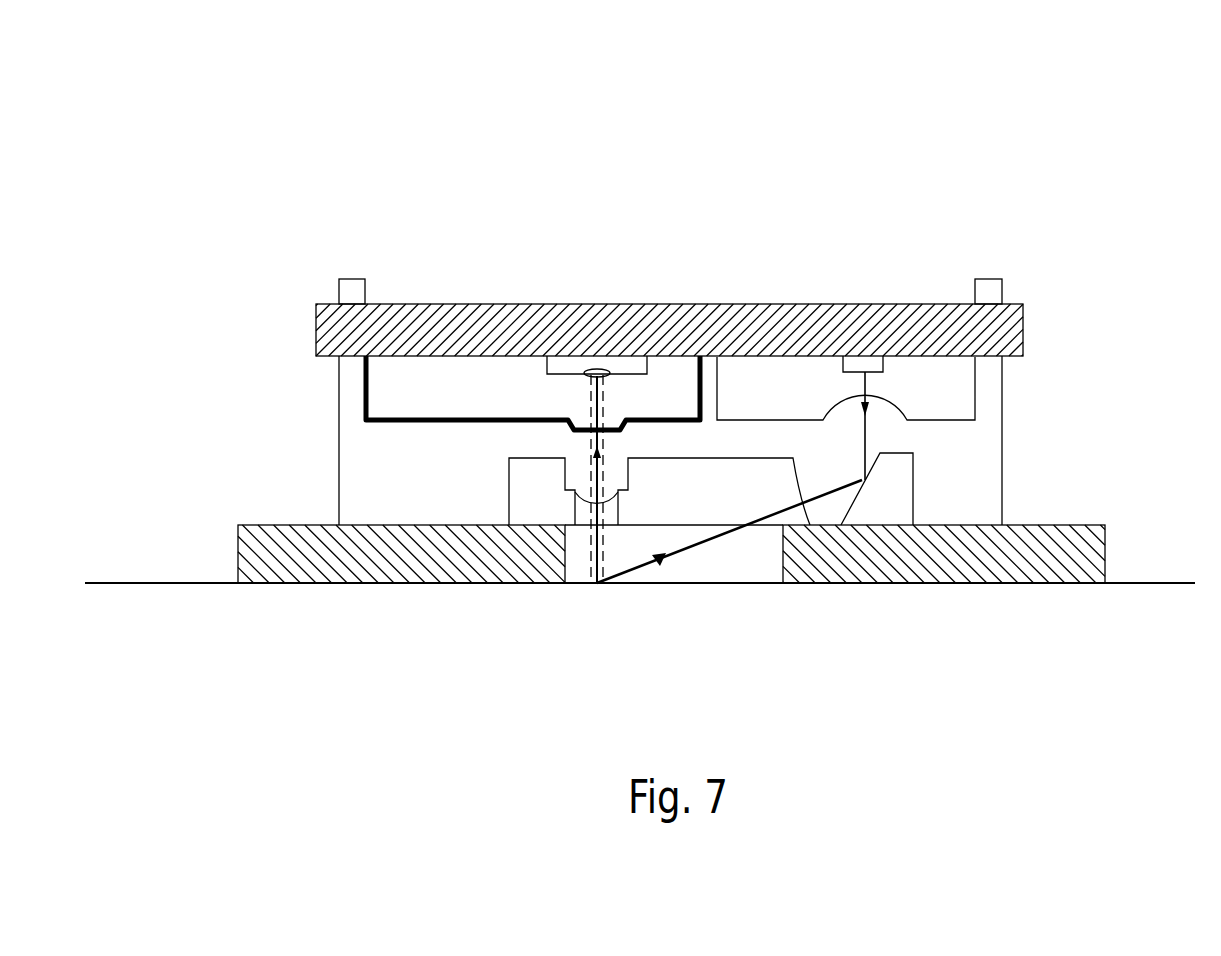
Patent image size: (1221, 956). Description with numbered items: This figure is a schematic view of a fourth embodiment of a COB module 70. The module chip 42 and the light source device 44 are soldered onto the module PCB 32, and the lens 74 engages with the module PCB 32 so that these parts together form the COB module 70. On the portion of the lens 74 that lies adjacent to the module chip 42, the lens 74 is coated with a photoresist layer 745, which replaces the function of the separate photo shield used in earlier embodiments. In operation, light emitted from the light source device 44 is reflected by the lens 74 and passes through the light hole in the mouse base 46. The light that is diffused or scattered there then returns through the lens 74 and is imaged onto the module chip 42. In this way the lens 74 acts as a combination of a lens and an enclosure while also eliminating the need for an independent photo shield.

The COB module 70 is at (836, 157).
The module PCB 32 is at (683, 303).
The module chip 42 is at (577, 357).
The light source device 44 is at (865, 357).
The lens 74 is at (1002, 412).
The mouse base 46 is at (1065, 525).
The photoresist layer 745 is at (462, 420).